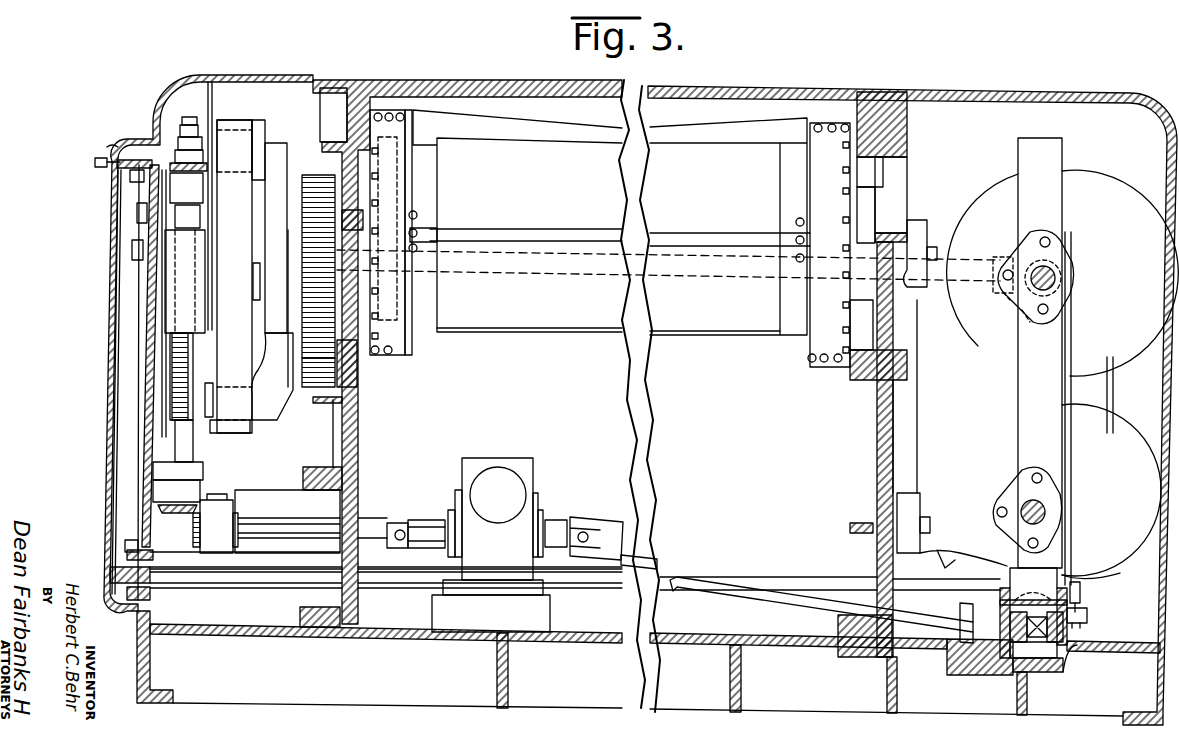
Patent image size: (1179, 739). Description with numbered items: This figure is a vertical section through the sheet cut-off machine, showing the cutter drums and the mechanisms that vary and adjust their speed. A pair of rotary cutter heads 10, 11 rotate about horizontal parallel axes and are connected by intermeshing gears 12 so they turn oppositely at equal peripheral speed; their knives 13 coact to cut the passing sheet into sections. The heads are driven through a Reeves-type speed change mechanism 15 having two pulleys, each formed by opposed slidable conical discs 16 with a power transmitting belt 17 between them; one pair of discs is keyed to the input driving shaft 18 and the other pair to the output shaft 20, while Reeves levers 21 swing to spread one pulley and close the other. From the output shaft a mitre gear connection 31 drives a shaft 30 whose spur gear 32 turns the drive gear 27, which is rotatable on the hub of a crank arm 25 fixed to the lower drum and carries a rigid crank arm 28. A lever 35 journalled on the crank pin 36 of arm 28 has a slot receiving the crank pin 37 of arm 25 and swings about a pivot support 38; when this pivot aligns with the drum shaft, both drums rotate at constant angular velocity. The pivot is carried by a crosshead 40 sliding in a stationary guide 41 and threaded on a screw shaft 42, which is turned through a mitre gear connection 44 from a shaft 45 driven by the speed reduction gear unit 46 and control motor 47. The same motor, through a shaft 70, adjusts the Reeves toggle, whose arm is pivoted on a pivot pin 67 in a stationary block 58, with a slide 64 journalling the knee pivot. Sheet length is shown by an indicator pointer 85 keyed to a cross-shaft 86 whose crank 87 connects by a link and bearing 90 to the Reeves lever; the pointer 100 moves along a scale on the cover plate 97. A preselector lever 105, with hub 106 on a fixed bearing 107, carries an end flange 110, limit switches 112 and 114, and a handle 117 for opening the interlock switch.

The rotary cutter head 10 is at (558, 148).
The lower cutter head 11 is at (517, 322).
The intermeshing gears 12 is at (415, 175).
The knives 13 is at (568, 237).
The speed change mechanism 15 is at (1027, 355).
The conical disc 16 is at (1120, 195).
The power transmitting belt 17 is at (1113, 400).
The input driving shaft 18 is at (1050, 513).
The output shaft 20 is at (1052, 278).
The Reeves lever 21 is at (1072, 462).
The crank arm 25 is at (283, 142).
The drive gear 27 is at (335, 382).
The crank arm 28 is at (280, 402).
The shaft 30 is at (552, 273).
The mitre gear connection 31 is at (1022, 310).
The spur gear 32 is at (325, 280).
The lever 35 is at (240, 432).
The crank pin 36 is at (218, 398).
The crank pin 37 is at (212, 153).
The pivot support 38 is at (253, 268).
The crosshead 40 is at (198, 306).
The stationary frame member or guide 41 is at (160, 357).
The screw shaft 42 is at (185, 444).
The mitre gear connection 44 is at (192, 534).
The shaft 45 is at (270, 527).
The speed reduction gear unit 46 is at (535, 472).
The control motor 47 is at (494, 478).
The stationary block 58 is at (1015, 660).
The slide or crosshead 64 is at (1068, 625).
The shaft or pivot pin 67 is at (1040, 665).
The shaft 70 is at (658, 562).
The indicator pointer 85 is at (117, 335).
The cross-shaft 86 is at (235, 575).
The crank 87 is at (1083, 592).
The bearing 90 is at (1088, 616).
The cover plate 97 is at (112, 308).
The pointer 100 is at (103, 174).
The preselector lever 105 is at (140, 388).
The hub 106 is at (126, 542).
The fixed bearing 107 is at (116, 580).
The end flange 110 is at (107, 150).
The limit switch 112 is at (132, 250).
The limit switch 114 is at (137, 213).
The handle 117 is at (94, 162).